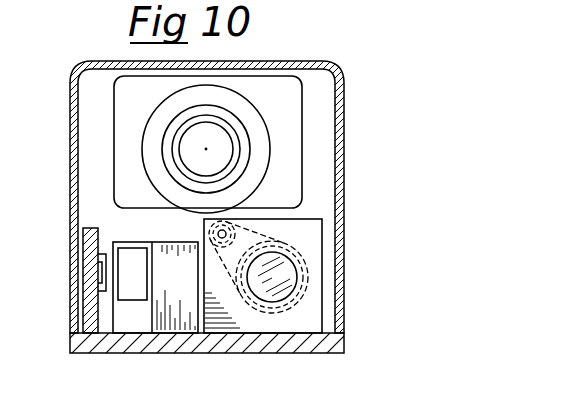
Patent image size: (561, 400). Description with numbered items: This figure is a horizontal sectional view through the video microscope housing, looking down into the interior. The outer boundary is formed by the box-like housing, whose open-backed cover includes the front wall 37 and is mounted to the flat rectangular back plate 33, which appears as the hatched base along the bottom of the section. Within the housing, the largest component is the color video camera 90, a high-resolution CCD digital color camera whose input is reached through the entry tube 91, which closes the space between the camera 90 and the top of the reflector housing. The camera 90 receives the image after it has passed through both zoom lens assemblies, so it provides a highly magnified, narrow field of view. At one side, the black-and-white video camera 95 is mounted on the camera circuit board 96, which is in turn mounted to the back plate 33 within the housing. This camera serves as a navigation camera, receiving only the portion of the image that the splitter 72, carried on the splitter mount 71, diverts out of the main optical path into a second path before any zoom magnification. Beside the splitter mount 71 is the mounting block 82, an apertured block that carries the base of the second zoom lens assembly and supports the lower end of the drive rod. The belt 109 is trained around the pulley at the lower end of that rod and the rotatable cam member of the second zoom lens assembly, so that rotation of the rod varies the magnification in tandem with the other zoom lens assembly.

The front wall 37 is at (288, 62).
The back plate 33 is at (143, 348).
The color video camera 90 is at (113, 107).
The entry tube 91 is at (178, 150).
The camera circuit board 96 is at (83, 244).
The black-and-white video camera 95 is at (104, 290).
The splitter mount 71 is at (169, 330).
The splitter 72 is at (131, 256).
The mounting block 82 is at (307, 321).
The belt 109 is at (275, 234).